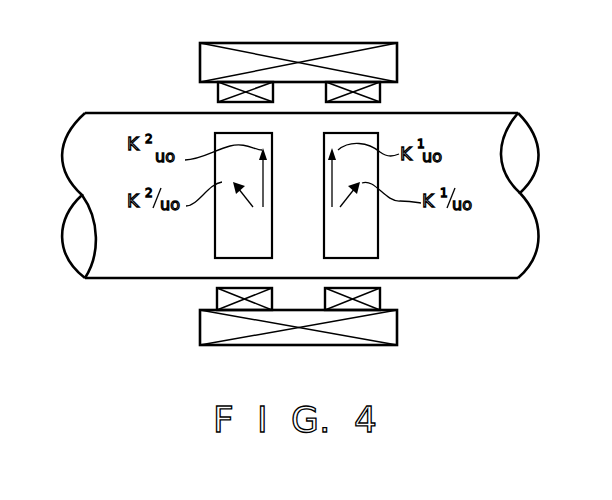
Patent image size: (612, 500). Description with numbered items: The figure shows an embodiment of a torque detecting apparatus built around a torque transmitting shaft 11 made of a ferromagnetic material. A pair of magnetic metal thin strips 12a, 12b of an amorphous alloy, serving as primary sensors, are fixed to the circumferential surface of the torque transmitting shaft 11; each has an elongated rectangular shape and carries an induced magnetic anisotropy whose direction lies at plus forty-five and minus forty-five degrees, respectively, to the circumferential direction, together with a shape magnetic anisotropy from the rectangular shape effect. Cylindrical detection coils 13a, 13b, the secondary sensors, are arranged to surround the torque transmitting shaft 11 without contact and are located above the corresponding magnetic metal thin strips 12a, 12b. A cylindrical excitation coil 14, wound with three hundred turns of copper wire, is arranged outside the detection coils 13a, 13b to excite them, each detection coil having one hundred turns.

The torque transmitting shaft 11 is at (488, 113).
The excitation coil 14 is at (305, 43).
The detection coil 13a is at (380, 95).
The detection coil 13b is at (218, 95).
The magnetic metal thin strip 12a is at (372, 238).
The magnetic metal thin strip 12b is at (216, 240).